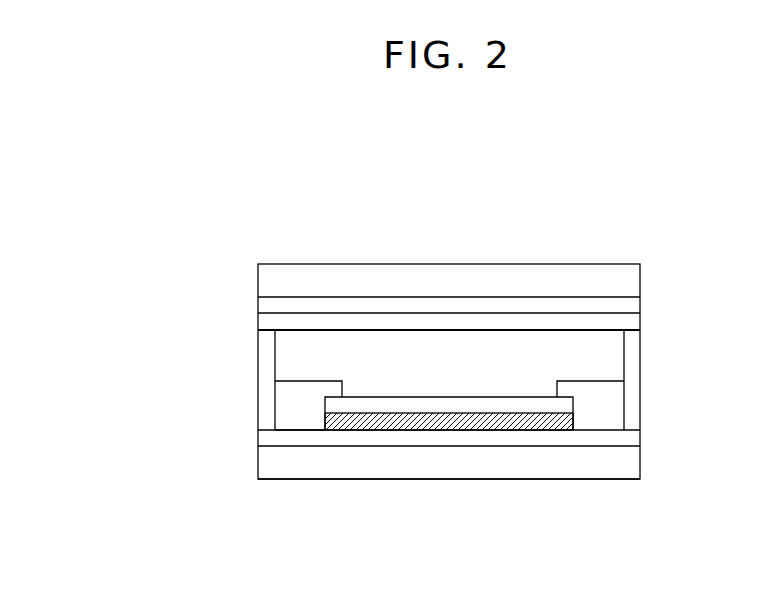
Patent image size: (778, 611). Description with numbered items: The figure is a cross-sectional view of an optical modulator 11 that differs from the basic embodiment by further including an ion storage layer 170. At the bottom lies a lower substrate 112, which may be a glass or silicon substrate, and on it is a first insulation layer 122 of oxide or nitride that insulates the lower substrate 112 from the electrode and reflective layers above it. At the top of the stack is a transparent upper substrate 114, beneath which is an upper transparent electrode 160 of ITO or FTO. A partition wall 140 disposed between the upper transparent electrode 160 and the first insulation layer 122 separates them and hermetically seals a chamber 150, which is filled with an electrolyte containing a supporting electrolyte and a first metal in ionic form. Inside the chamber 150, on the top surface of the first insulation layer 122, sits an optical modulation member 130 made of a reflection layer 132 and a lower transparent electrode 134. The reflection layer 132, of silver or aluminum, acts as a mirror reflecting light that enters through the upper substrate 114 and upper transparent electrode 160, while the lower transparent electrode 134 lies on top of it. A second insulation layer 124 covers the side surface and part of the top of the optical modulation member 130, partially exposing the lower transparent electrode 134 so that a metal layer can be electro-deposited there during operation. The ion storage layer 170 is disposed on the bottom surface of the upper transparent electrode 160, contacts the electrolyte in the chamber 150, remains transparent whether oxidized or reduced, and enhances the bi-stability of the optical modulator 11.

The optical modulator 11 is at (623, 196).
The lower substrate 112 is at (270, 465).
The upper substrate 114 is at (267, 277).
The first insulation layer 122 is at (270, 438).
The second insulation layer 124 is at (287, 410).
The optical modulation member 130 is at (449, 490).
The reflection layer 132 is at (450, 423).
The lower transparent electrode 134 is at (377, 405).
The partition wall 140 is at (268, 383).
The chamber 150 is at (497, 347).
The upper transparent electrode 160 is at (267, 303).
The ion storage layer 170 is at (265, 322).